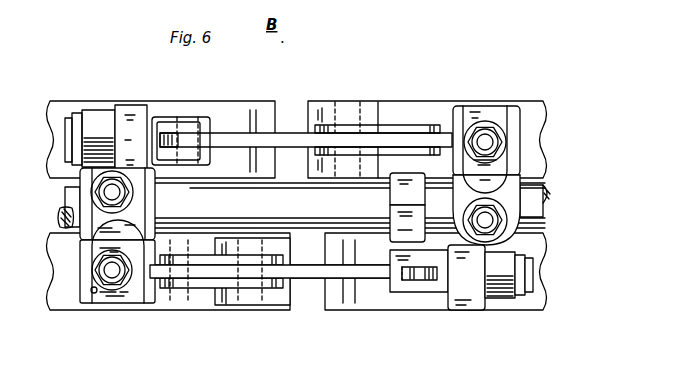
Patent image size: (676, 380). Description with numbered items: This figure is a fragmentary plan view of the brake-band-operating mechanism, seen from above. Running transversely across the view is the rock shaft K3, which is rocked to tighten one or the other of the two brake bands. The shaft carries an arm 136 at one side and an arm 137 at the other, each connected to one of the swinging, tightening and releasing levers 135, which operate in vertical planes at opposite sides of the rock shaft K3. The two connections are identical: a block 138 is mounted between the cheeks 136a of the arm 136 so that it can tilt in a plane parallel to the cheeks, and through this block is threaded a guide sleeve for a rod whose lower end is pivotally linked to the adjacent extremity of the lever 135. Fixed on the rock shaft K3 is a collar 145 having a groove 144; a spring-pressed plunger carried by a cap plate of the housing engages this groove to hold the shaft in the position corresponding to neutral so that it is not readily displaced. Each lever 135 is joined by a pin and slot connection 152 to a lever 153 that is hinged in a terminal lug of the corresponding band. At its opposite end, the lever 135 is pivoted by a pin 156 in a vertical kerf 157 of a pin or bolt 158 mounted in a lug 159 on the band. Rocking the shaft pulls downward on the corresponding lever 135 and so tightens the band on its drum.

The rock shaft K3 is at (72, 199).
The swinging, tightening and releasing lever 135 is at (290, 140).
The arm 136 is at (142, 303).
The cheeks 136a is at (93, 288).
The arm 137 is at (510, 113).
The block 138 is at (107, 293).
The groove 144 is at (410, 206).
The collar 145 is at (397, 191).
The pin and slot connection 152 is at (183, 288).
The lever 153 is at (210, 287).
The pin 156 is at (398, 300).
The vertical kerf 157 is at (455, 282).
The pin or bolt 158 is at (430, 296).
The lug 159 is at (480, 310).